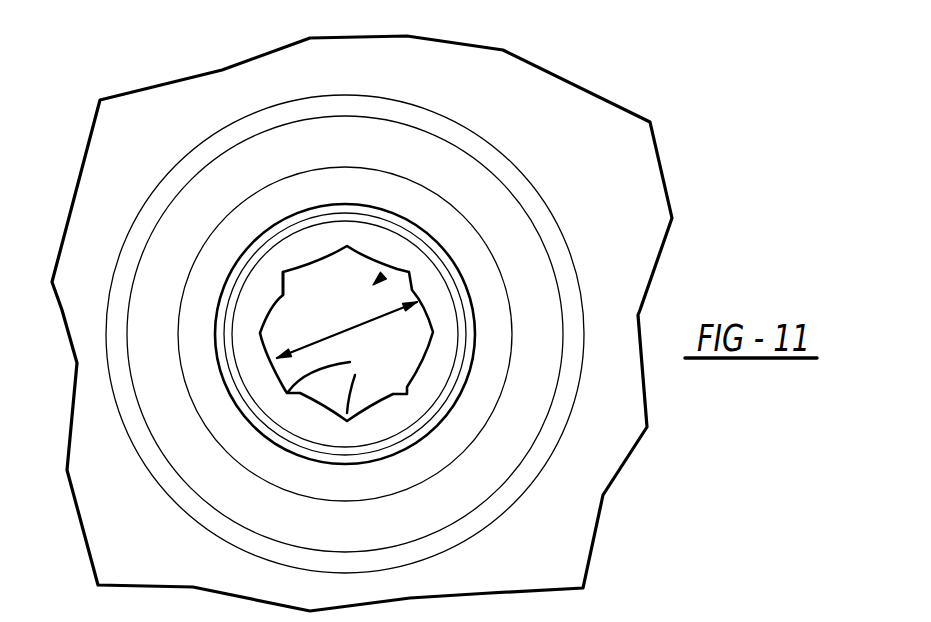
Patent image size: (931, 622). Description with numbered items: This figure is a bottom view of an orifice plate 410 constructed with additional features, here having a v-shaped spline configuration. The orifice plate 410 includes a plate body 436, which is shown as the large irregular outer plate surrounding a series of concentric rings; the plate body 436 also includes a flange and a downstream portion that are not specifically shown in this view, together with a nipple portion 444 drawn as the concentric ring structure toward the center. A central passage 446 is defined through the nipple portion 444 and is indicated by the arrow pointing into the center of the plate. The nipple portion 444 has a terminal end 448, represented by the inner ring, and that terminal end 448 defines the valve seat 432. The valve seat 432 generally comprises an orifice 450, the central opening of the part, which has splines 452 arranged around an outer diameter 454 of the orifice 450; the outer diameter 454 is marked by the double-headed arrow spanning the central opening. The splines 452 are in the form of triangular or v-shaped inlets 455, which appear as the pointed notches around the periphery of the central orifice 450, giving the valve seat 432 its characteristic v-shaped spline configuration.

The orifice plate 410 is at (600, 285).
The plate body 436 is at (622, 152).
The nipple portion 444 is at (217, 352).
The terminal end 448 is at (267, 426).
The valve seat 432 is at (442, 360).
The splines 452 is at (408, 397).
The orifice 450 is at (282, 313).
The central passage 446 is at (378, 281).
The outer diameter 454 is at (326, 339).
The v-shaped inlets 455 is at (336, 380).